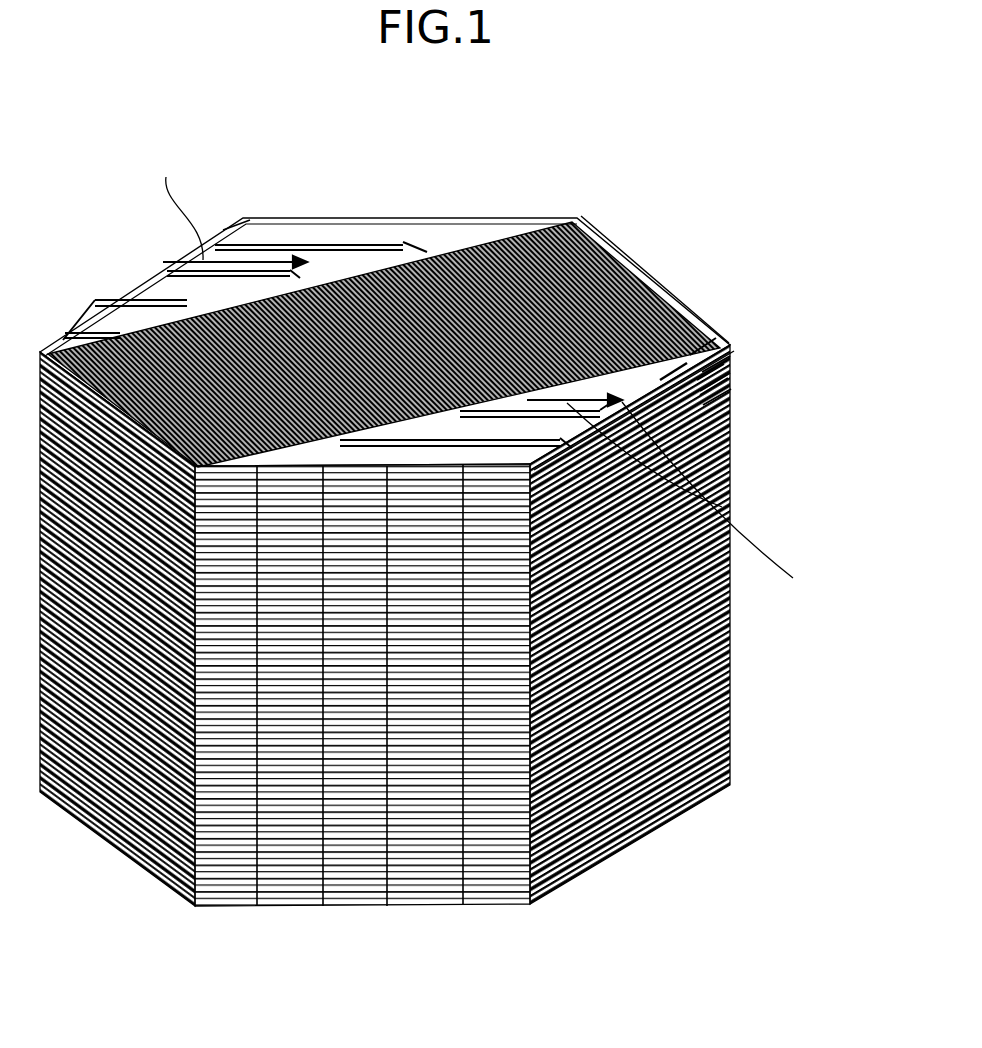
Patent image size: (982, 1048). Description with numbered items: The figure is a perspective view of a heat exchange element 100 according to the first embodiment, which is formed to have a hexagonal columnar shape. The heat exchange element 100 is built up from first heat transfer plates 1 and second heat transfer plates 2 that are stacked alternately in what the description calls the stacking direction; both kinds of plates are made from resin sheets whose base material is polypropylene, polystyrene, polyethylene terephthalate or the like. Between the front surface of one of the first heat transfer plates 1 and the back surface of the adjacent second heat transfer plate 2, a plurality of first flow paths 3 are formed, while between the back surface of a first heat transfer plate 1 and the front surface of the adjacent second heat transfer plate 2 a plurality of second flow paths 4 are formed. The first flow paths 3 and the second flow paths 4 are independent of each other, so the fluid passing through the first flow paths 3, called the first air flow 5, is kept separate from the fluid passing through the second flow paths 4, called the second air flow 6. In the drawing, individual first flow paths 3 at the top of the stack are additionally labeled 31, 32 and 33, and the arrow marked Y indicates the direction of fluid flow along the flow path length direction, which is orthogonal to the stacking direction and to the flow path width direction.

The heat exchange element 100 is at (652, 146).
The first heat transfer plate 1 is at (717, 338).
The second heat transfer plate 2 is at (724, 364).
The first flow path 3 is at (440, 316).
The second flow path 4 is at (754, 331).
The first air flow 5 is at (722, 373).
The second air flow 6 is at (730, 356).
The first plate 31 is at (609, 253).
The second plate 32 is at (310, 233).
The third plate 33 is at (717, 442).